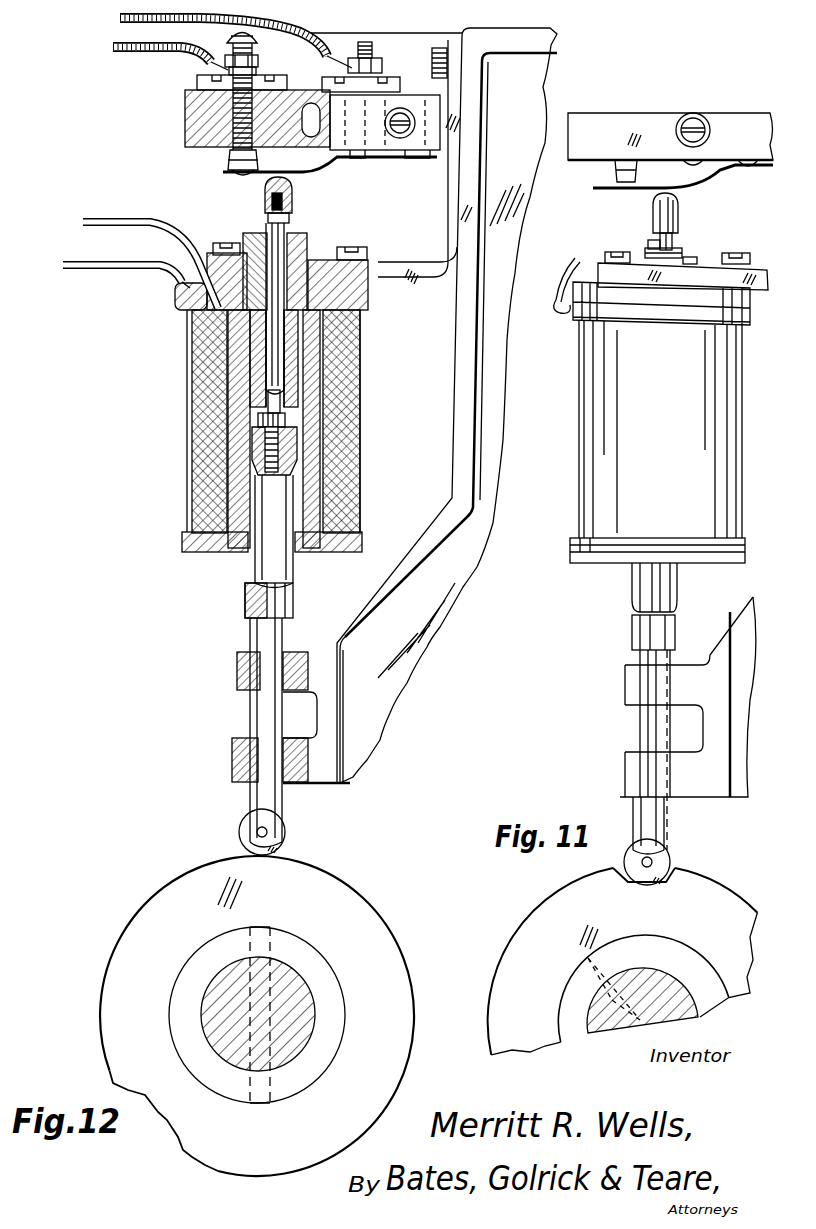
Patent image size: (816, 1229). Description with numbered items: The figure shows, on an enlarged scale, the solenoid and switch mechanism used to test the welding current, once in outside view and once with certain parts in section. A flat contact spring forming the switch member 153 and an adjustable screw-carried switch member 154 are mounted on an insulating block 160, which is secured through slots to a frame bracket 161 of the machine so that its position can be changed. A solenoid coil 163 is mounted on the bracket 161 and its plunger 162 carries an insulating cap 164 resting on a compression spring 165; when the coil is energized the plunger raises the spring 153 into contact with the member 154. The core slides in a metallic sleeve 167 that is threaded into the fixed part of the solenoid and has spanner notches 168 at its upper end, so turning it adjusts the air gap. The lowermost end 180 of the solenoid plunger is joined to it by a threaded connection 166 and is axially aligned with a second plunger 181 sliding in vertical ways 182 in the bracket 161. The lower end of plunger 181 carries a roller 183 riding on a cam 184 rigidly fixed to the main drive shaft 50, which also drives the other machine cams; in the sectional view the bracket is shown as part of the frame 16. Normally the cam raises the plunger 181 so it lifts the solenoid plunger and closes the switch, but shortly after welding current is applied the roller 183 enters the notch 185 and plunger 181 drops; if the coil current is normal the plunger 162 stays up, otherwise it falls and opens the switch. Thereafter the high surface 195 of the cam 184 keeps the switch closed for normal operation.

In FIG. 11, the frame bracket 16 is at (686, 684).
In FIG. 12, the main drive shaft 50 is at (307, 993).
In FIG. 11, the main drive shaft 50 is at (620, 968).
In FIG. 12, the switch member 153 is at (246, 176).
In FIG. 11, the switch member 153 is at (606, 192).
In FIG. 12, the adjustable switch member 154 is at (228, 155).
In FIG. 11, the adjustable switch member 154 is at (612, 167).
In FIG. 12, the insulating block 160 is at (197, 115).
In FIG. 11, the insulating block 160 is at (633, 112).
In FIG. 12, the frame bracket 161 is at (450, 142).
In FIG. 12, the solenoid plunger 162 is at (284, 231).
In FIG. 11, the solenoid plunger 162 is at (683, 241).
In FIG. 12, the solenoid coil 163 is at (340, 395).
In FIG. 11, the solenoid coil 163 is at (592, 423).
In FIG. 12, the insulating cap 164 is at (294, 203).
In FIG. 11, the insulating cap 164 is at (679, 213).
In FIG. 12, the compression spring 165 is at (268, 208).
In FIG. 12, the threaded connection 166 is at (281, 417).
In FIG. 12, the metallic sleeve 167 is at (298, 352).
In FIG. 11, the metallic sleeve 167 is at (690, 253).
In FIG. 11, the spanner notches 168 is at (651, 240).
In FIG. 12, the lowermost end of solenoid plunger 180 is at (294, 569).
In FIG. 11, the lowermost end of solenoid plunger 180 is at (636, 591).
In FIG. 12, the second plunger 181 is at (280, 634).
In FIG. 11, the second plunger 181 is at (650, 728).
In FIG. 12, the vertical ways 182 is at (254, 670).
In FIG. 12, the roller 183 is at (287, 832).
In FIG. 11, the roller 183 is at (669, 858).
In FIG. 12, the cam 184 is at (355, 907).
In FIG. 11, the cam 184 is at (623, 959).
In FIG. 12, the notch 185 is at (166, 1119).
In FIG. 11, the notch 185 is at (623, 880).
In FIG. 12, the high surface 195 is at (182, 876).